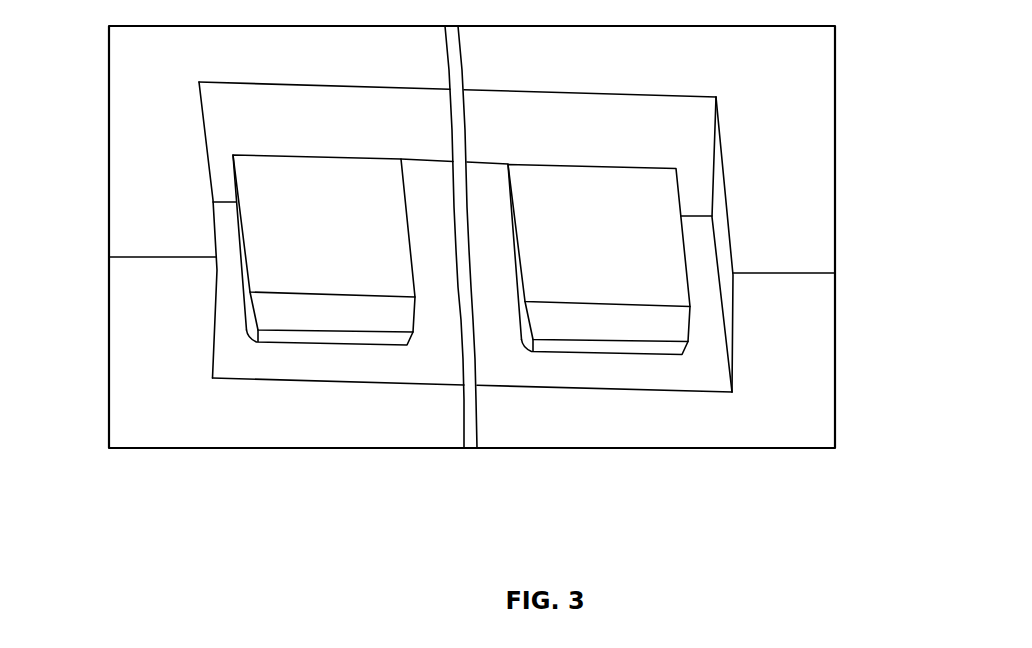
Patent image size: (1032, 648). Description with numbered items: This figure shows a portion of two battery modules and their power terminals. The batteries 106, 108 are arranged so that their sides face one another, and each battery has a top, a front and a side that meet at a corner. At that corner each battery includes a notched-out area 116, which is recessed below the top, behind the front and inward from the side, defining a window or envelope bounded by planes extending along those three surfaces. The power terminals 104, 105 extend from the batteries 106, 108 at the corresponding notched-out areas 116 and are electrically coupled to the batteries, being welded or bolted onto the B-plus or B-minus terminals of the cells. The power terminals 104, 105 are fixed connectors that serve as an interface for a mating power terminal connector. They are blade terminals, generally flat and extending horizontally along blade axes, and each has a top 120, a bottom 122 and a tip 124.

The power terminal 104 is at (353, 322).
The power terminal 105 is at (640, 322).
The battery 106 is at (161, 215).
The battery 108 is at (803, 260).
The notched-out area 116 is at (440, 375).
The top 120 is at (287, 258).
The bottom 122 is at (242, 277).
The tip 124 is at (372, 341).